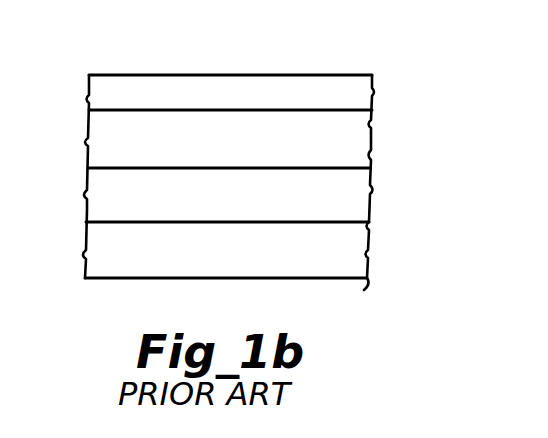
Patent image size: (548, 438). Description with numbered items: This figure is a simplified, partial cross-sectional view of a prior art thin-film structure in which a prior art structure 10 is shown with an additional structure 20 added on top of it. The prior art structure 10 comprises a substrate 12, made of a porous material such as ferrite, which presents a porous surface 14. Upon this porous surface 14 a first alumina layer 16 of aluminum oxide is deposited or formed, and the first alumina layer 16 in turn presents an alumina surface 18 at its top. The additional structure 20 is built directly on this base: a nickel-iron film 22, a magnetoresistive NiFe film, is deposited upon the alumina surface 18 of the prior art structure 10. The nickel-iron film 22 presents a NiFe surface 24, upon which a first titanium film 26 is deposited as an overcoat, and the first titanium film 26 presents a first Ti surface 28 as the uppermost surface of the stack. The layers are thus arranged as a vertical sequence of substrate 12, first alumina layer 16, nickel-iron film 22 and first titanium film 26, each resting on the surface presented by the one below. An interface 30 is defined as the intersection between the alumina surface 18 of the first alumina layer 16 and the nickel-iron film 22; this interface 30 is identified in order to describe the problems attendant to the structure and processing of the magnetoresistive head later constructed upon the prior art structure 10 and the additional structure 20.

The prior art structure 10 is at (73, 247).
The substrate 12 is at (362, 286).
The porous surface 14 is at (372, 242).
The first alumina layer 16 is at (372, 205).
The alumina surface 18 is at (356, 168).
The additional structure 20 is at (74, 127).
The nickel-iron film 22 is at (358, 129).
The NiFe surface 24 is at (340, 110).
The first titanium film 26 is at (372, 82).
The first Ti surface 28 is at (346, 75).
The interface 30 is at (370, 171).